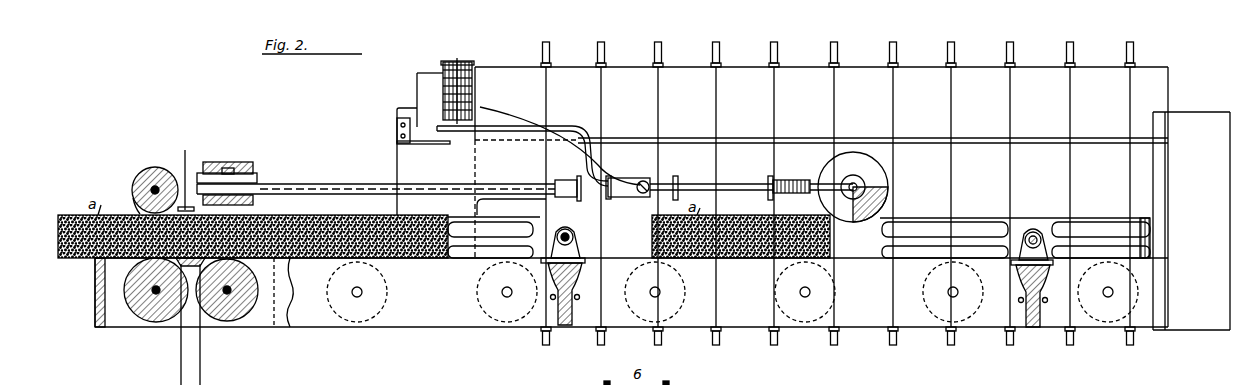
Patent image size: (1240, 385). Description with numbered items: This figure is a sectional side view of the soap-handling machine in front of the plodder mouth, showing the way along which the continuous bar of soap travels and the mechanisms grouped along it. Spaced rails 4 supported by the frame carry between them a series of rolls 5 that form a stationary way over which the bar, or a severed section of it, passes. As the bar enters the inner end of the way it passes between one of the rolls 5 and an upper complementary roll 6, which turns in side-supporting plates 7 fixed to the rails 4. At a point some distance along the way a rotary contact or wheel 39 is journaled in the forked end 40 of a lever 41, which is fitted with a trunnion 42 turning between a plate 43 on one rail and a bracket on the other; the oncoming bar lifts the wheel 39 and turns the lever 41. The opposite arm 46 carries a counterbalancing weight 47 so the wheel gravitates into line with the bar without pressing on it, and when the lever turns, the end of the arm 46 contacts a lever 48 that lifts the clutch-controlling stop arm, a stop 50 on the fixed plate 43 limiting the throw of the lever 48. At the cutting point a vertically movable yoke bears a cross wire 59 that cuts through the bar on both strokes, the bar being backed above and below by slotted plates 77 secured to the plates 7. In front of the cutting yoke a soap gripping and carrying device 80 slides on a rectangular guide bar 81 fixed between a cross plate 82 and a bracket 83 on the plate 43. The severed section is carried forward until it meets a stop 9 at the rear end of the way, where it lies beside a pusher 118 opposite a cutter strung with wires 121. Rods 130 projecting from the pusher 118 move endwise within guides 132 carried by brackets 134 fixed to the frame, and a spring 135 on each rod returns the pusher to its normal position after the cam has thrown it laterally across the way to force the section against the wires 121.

The rails 4 is at (406, 318).
The rolls 5 is at (148, 318).
The upper complementary roll 6 is at (157, 173).
The side-supporting plates 7 is at (137, 185).
The stop 9 is at (1191, 221).
The rotary contact or wheel 39 is at (868, 187).
The forked end 40 is at (792, 186).
The lever 41 is at (700, 184).
The trunnion 42 is at (644, 180).
The plate 43 is at (510, 162).
The arm 46 is at (577, 126).
The counterbalancing weight 47 is at (474, 92).
The lever 48 is at (432, 127).
The stop 50 is at (436, 144).
The cross wire 59 is at (183, 320).
The plates 77 is at (184, 177).
The soap gripping and carrying device 80 is at (247, 167).
The rectangular guide bar 81 is at (303, 182).
The cross plate 82 is at (197, 200).
The bracket 83 is at (571, 180).
The pusher 118 is at (470, 262).
The wires 121 is at (838, 118).
The rod 130 is at (582, 250).
The guide 132 is at (556, 268).
The brackets 134 is at (563, 322).
The spring 135 is at (563, 231).